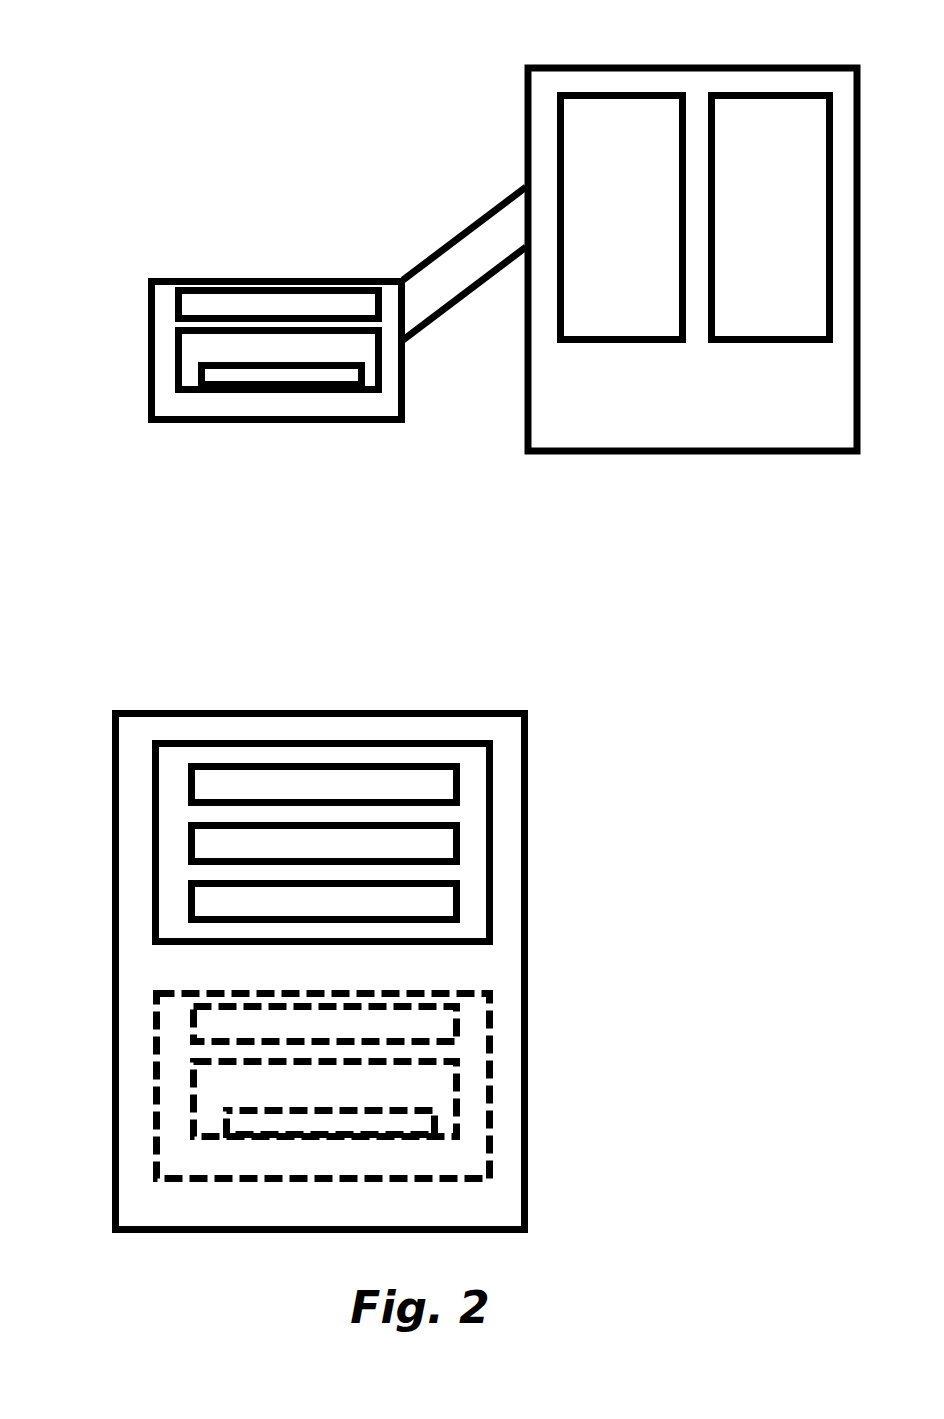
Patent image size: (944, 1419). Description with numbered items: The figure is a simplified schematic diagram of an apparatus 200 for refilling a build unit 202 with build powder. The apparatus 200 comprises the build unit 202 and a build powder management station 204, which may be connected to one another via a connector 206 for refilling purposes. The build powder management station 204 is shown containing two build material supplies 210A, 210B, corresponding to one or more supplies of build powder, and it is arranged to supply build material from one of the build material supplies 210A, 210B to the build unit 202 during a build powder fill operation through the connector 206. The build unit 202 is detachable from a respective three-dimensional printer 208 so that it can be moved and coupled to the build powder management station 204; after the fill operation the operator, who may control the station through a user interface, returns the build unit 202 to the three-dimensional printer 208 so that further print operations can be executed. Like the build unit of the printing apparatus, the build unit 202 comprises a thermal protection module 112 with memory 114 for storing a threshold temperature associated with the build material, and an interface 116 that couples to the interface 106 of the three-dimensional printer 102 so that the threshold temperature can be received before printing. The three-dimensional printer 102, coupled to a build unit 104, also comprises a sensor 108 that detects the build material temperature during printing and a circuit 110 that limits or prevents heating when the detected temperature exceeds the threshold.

The apparatus for refilling a build unit 200 is at (422, 5).
The build unit 202 is at (177, 275).
The build powder management station 204 is at (722, 65).
The connector 206 is at (477, 217).
The 3D printer 208 is at (173, 709).
The build material supply 210A is at (617, 347).
The build material supply 210B is at (762, 347).
The 3D printer 102 is at (150, 803).
The build unit 104 is at (150, 1052).
The interface 106 is at (460, 900).
The sensor 108 is at (460, 843).
The circuit 110 is at (460, 785).
The thermal protection module 112 is at (380, 383).
The memory 114 is at (435, 1120).
The interface 116 is at (460, 1028).